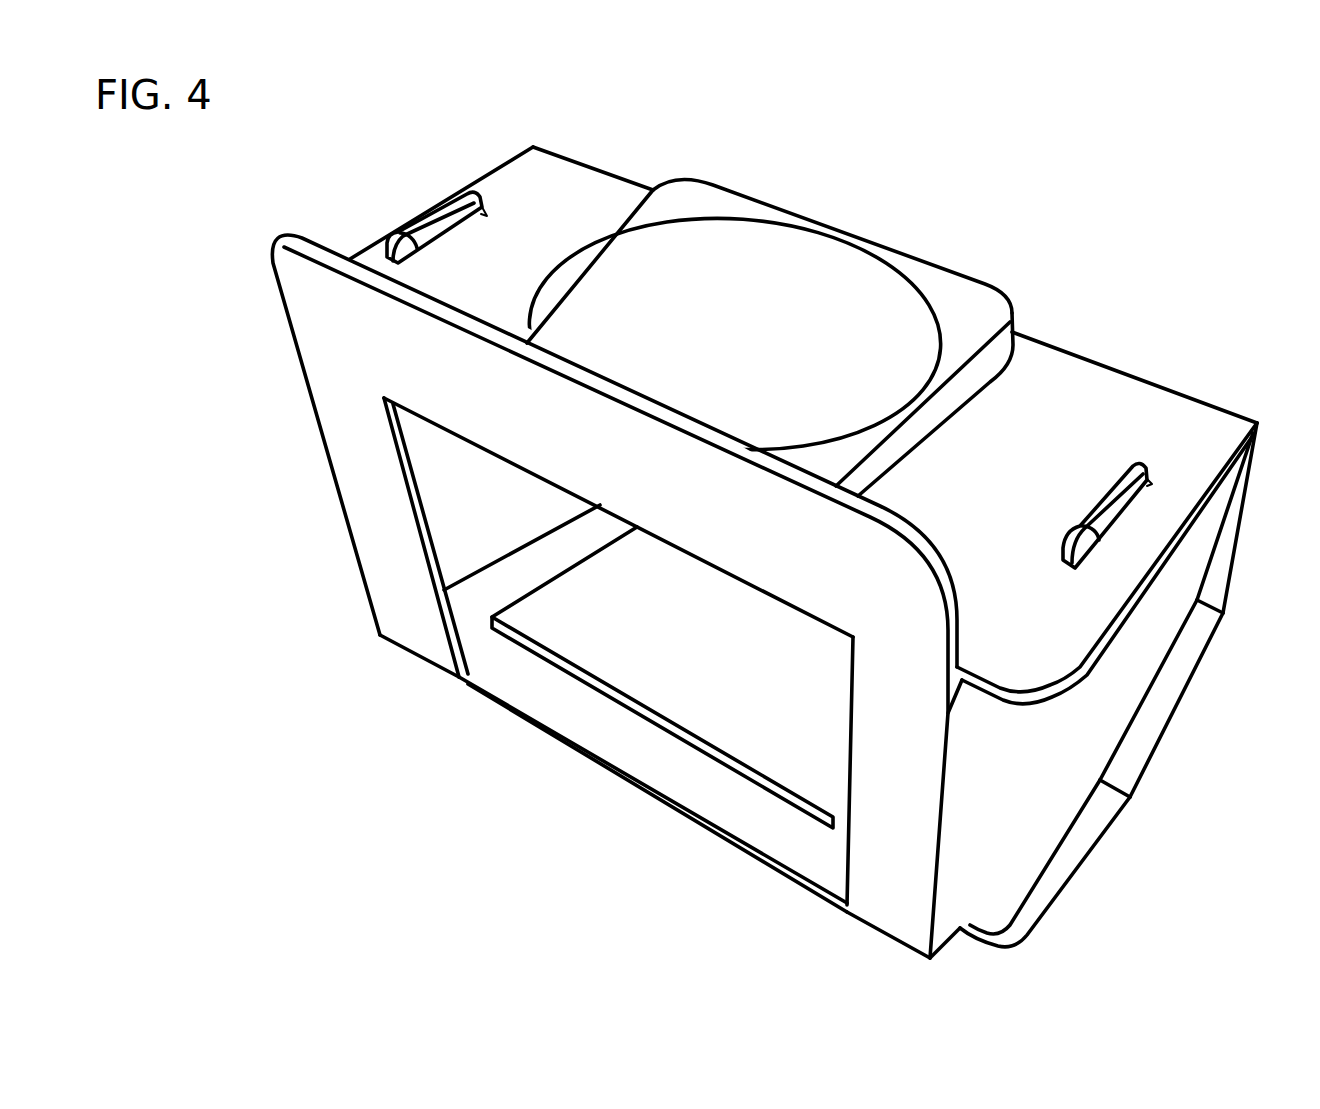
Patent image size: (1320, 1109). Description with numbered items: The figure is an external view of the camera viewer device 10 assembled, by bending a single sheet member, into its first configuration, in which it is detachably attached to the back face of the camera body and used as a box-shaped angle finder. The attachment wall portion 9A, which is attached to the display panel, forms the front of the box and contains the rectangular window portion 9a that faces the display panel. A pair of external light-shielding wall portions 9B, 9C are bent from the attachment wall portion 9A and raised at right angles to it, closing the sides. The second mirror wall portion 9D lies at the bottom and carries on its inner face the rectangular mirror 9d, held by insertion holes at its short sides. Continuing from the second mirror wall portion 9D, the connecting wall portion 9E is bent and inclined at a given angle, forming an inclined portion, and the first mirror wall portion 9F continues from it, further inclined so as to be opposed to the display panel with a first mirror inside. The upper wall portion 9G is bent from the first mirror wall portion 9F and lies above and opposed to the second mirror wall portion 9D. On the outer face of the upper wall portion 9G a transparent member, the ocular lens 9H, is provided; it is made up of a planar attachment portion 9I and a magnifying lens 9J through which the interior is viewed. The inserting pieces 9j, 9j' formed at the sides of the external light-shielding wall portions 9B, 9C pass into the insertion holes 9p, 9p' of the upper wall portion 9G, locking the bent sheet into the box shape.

The camera viewer device 10 is at (768, 524).
The attachment wall portion 9A is at (312, 401).
The external light-shielding wall portion 9B is at (1027, 848).
The external light-shielding wall portion 9C is at (422, 457).
The rectangular window portion 9a is at (449, 531).
The second mirror wall portion 9D is at (727, 820).
The rectangular mirror 9d is at (640, 700).
The connecting wall portion 9E is at (1170, 707).
The first mirror wall portion 9F is at (1222, 557).
The upper wall portion 9G is at (575, 168).
The ocular lens 9H is at (767, 293).
The planar attachment portion 9I is at (707, 200).
The magnifying lens 9J is at (698, 135).
The inserting piece 9j is at (1107, 500).
The inserting piece 9j' is at (437, 207).
The insertion hole 9p is at (1073, 511).
The insertion hole 9p' is at (391, 222).